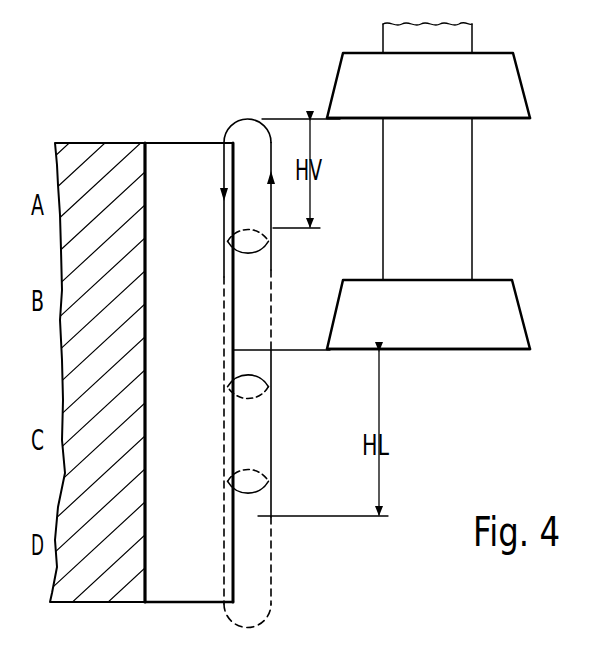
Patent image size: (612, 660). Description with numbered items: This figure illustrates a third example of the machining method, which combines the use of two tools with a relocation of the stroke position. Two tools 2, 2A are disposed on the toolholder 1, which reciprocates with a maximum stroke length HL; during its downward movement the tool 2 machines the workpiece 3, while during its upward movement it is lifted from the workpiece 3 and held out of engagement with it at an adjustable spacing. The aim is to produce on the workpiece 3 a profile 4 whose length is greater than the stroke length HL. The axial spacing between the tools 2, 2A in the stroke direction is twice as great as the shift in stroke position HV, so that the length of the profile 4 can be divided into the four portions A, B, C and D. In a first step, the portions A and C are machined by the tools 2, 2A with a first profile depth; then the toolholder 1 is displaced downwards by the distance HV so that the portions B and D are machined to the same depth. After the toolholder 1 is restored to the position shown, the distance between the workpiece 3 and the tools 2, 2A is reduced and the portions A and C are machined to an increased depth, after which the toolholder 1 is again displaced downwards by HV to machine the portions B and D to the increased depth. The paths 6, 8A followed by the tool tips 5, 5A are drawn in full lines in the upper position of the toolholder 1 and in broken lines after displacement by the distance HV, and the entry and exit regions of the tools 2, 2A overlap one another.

The toolholder 1 is at (457, 42).
The tool 2 is at (505, 97).
The second tool 2A is at (502, 333).
The workpiece 3 is at (70, 578).
The profile 4 is at (190, 565).
The tool tip 5 is at (328, 118).
The tip of second tool 5A is at (327, 351).
The path 6 is at (270, 186).
The path of second tool tip 8A is at (272, 447).